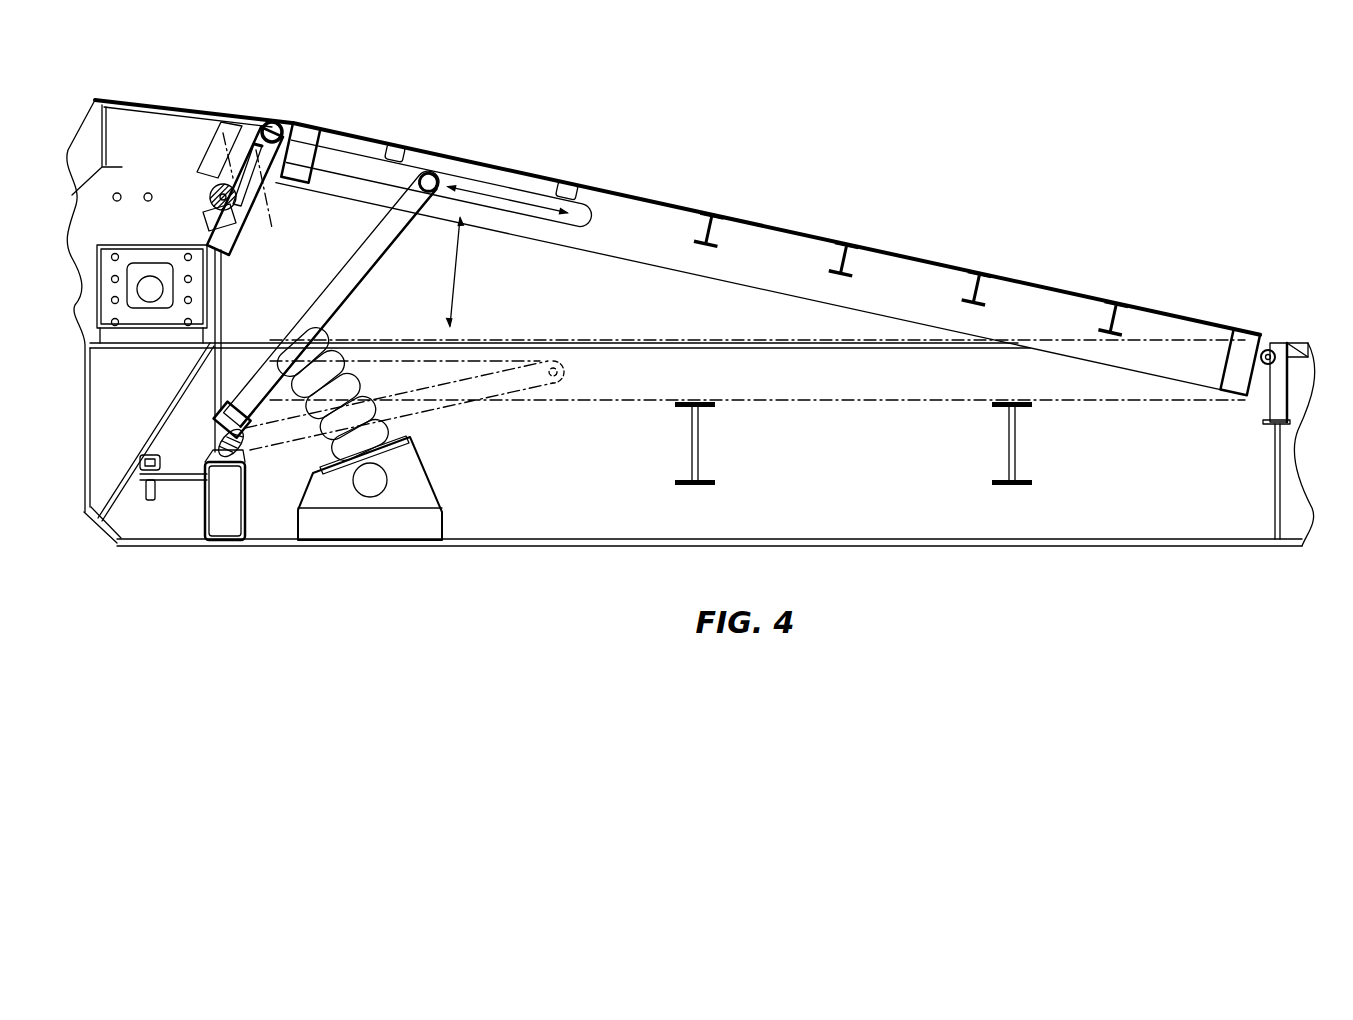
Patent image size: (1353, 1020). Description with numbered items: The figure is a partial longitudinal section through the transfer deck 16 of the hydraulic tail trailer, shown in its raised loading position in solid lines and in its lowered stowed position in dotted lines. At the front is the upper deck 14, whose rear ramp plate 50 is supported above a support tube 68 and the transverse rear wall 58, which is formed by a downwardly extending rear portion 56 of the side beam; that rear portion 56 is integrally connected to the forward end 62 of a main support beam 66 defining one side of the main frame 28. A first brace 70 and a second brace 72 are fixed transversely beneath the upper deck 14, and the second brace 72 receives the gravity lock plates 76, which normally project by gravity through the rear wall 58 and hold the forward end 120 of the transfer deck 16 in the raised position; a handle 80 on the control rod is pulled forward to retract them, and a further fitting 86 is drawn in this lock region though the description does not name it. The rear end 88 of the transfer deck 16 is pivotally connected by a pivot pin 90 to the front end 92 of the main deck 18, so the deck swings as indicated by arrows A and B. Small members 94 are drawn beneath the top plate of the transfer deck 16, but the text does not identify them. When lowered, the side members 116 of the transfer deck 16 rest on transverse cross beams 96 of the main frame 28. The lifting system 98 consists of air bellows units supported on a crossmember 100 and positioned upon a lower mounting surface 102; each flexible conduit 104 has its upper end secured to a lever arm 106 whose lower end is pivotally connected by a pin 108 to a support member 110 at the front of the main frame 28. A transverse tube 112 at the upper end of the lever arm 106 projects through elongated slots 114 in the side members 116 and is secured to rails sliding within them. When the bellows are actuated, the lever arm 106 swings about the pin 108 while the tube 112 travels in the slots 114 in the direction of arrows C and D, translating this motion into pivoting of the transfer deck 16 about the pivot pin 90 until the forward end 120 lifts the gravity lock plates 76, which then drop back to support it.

The upper deck 14 is at (210, 93).
The transfer deck 16 is at (824, 224).
The main deck 18 is at (1318, 330).
The main frame 28 is at (709, 550).
The rear ramp plate 50 is at (185, 100).
The rear portion 56 is at (106, 432).
The rear wall 58 is at (224, 292).
The forward end 62 is at (222, 380).
The main support beam 66 is at (581, 518).
The support tube 68 is at (283, 124).
The first brace 70 is at (108, 122).
The second brace 72 is at (210, 138).
The gravity lock plates 76 is at (279, 194).
The handle 80 is at (250, 143).
The fastener 86 is at (210, 188).
The rear end 88 is at (1248, 332).
The pivot pin 90 is at (1268, 349).
The front end 92 is at (1299, 343).
The deck support 94 is at (718, 236).
The cross beams 96 is at (699, 437).
The lifting system 98 is at (338, 330).
The crossmember 100 is at (441, 484).
The lower mounting surface 102 is at (500, 539).
The conduit 104 is at (384, 432).
The lever arm 106 is at (364, 263).
The pin 108 is at (248, 454).
The support member 110 is at (232, 507).
The tube 112 is at (429, 170).
The elongated slots 114 is at (497, 193).
The side members 116 is at (634, 217).
The forward end 120 is at (312, 126).
The arrow A is at (454, 324).
The arrow B is at (463, 221).
The arrow C is at (446, 192).
The arrow D is at (567, 219).